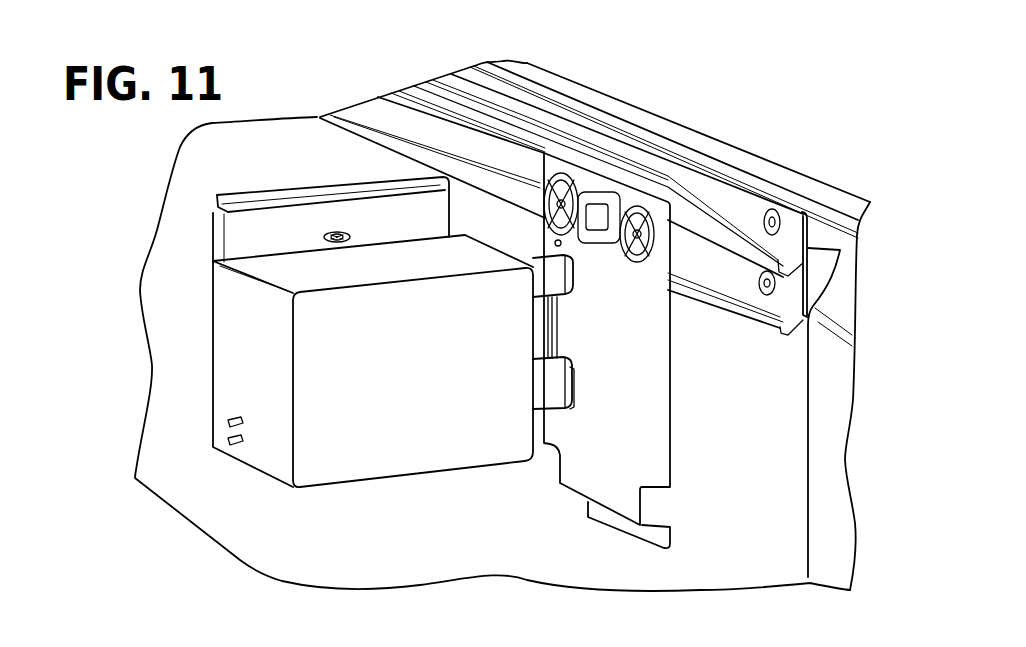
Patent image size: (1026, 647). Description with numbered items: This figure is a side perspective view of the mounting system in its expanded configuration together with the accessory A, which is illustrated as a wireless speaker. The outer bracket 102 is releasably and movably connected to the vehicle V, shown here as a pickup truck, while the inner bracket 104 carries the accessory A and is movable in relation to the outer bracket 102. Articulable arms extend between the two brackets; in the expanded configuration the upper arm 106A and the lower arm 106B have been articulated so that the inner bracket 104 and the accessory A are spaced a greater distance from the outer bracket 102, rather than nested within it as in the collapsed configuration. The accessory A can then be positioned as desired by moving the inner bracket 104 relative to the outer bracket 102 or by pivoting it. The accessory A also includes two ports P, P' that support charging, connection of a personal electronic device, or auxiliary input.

The inner bracket 104 is at (312, 208).
The accessory A is at (373, 246).
The upper arm 106A is at (557, 278).
The lower arm 106B is at (551, 378).
The vehicle V is at (752, 413).
The outer bracket 102 is at (603, 411).
The port P is at (280, 403).
The port P' is at (285, 431).